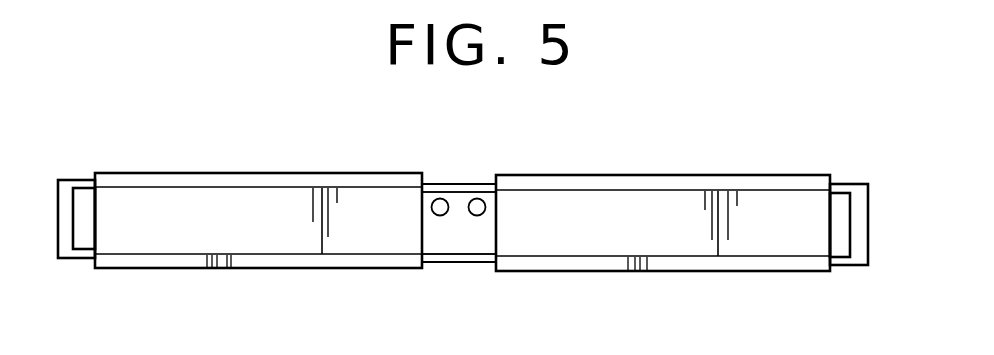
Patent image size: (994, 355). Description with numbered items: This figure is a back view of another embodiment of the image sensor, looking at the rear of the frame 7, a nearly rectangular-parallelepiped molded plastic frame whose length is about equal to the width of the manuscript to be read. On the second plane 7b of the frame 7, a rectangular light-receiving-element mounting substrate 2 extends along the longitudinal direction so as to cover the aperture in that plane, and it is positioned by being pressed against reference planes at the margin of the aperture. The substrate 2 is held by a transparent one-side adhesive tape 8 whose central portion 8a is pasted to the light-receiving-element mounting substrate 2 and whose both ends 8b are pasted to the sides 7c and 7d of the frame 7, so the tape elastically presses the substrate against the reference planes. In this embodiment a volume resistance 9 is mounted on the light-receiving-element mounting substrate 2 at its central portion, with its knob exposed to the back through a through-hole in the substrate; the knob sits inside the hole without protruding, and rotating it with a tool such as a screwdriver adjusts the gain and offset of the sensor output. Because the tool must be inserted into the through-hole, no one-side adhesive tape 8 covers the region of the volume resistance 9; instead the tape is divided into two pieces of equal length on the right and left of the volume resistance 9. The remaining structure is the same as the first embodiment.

The light-receiving-element mounting substrate 2 is at (478, 242).
The frame 7 is at (76, 166).
The second plane 7b is at (68, 250).
The side 7c is at (462, 257).
The side 7d is at (466, 183).
The one-side adhesive tape 8 is at (379, 165).
The central portion of the tape 8a is at (280, 197).
The both ends of the tape 8b is at (268, 270).
The volume resistance 9 is at (476, 216).